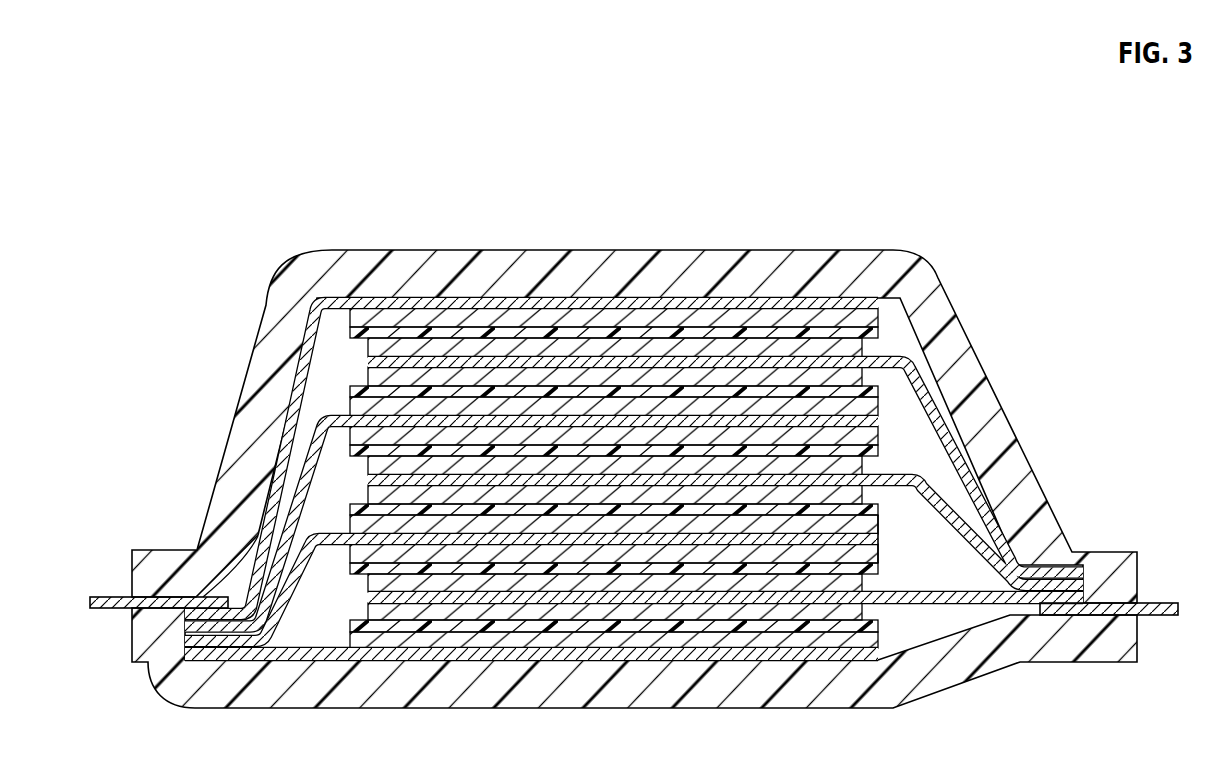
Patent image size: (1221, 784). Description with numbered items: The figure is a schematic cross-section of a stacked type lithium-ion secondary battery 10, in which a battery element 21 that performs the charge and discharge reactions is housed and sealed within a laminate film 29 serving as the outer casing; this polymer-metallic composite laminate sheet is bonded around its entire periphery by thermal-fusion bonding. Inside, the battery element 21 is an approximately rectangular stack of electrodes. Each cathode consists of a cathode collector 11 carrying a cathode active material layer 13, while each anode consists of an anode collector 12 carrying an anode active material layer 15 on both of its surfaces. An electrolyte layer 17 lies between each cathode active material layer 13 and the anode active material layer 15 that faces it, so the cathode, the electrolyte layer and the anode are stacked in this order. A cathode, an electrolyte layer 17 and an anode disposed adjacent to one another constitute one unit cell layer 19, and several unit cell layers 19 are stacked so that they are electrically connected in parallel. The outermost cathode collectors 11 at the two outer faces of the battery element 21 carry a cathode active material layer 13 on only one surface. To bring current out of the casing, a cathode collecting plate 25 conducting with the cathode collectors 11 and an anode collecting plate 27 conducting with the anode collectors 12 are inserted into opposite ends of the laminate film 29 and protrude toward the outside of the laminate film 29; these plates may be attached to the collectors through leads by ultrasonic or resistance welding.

The lithium-ion secondary battery 10 is at (152, 58).
The cathode collector 11 is at (745, 305).
The anode collector 12 is at (470, 358).
The cathode active material layer 13 is at (525, 320).
The anode active material layer 15 is at (680, 347).
The electrolyte layer 17 is at (597, 332).
The unit cell layer 19 is at (634, 385).
The battery element 21 is at (891, 542).
The cathode collecting plate 25 is at (113, 595).
The anode collecting plate 27 is at (1153, 602).
The laminate film 29 is at (1112, 553).